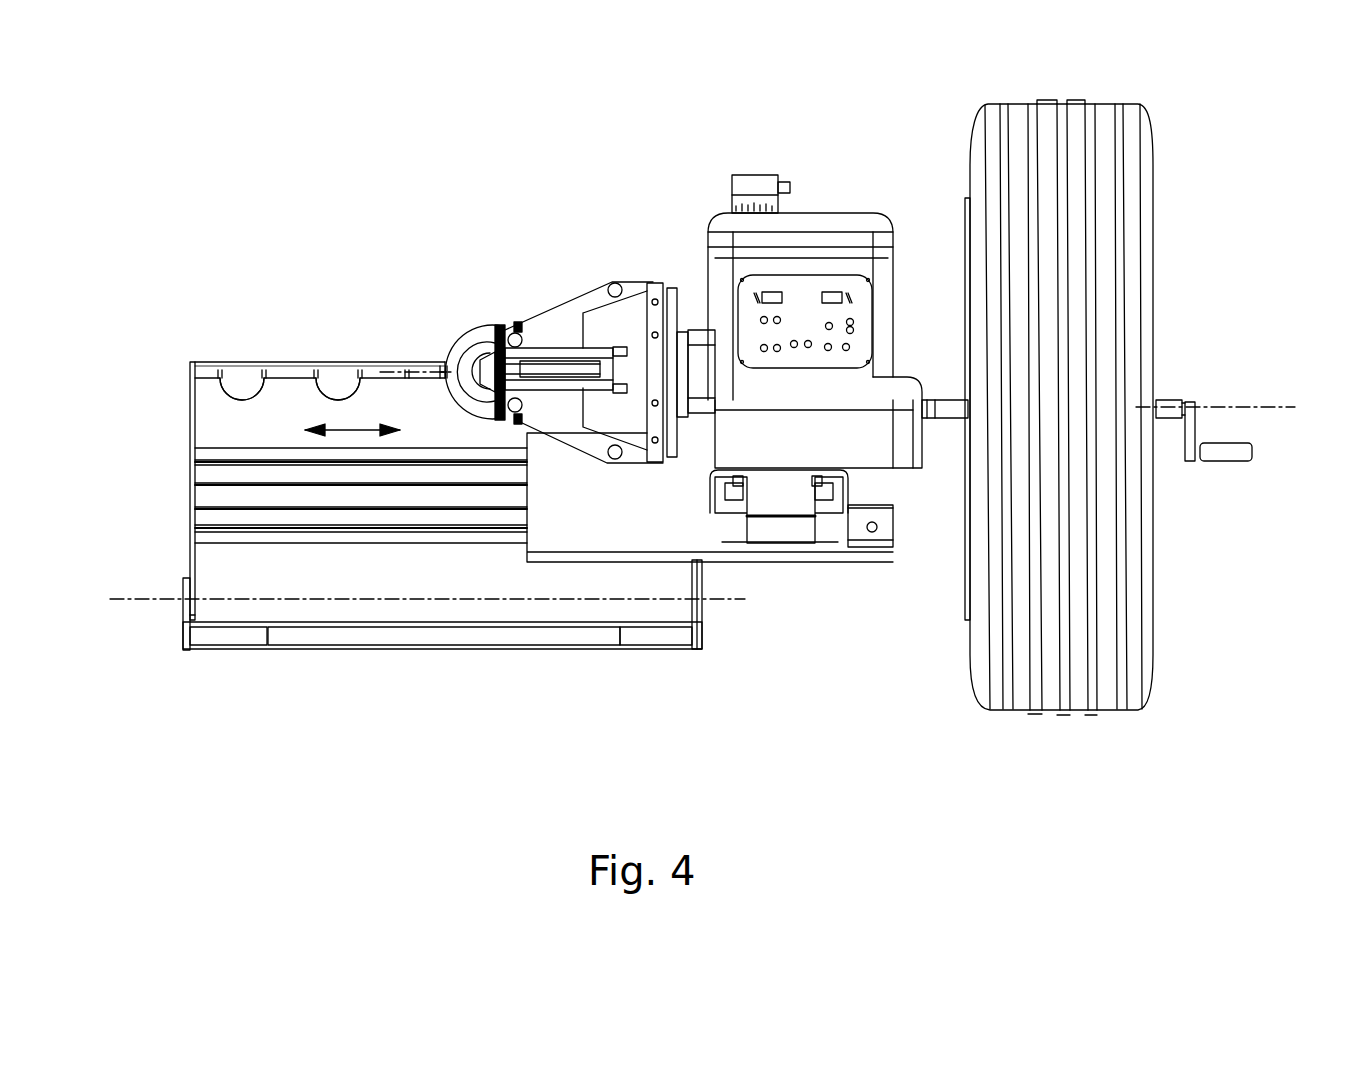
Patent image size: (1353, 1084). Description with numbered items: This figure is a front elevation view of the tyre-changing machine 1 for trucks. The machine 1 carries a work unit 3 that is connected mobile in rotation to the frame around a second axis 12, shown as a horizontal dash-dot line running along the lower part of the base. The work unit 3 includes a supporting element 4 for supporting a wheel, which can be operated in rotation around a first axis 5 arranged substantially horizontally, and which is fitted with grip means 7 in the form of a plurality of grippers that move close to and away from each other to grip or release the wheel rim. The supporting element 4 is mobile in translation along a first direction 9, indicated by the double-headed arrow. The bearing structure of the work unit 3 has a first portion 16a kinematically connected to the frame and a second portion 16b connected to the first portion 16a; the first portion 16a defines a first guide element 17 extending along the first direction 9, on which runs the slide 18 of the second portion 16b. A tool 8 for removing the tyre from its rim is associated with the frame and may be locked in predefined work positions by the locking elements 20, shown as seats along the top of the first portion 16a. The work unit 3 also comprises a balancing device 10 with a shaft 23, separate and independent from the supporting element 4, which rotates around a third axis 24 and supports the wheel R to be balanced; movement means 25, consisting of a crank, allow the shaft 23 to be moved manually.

The tyre-changing machine 1 is at (158, 160).
The work unit 3 is at (685, 482).
The supporting element 4 is at (588, 290).
The first axis 5 is at (388, 355).
The grip means 7 is at (548, 333).
The tool 8 is at (460, 350).
The first direction 9 is at (350, 432).
The balancing device 10 is at (838, 210).
The second axis 12 is at (118, 598).
The first portion 16a is at (215, 433).
The second portion 16b is at (848, 512).
The first guide element 17 is at (225, 473).
The slide 18 is at (575, 517).
The locking elements 20 is at (327, 365).
The shaft 23 is at (945, 400).
The third axis 24 is at (1245, 405).
The movement means 25 is at (1218, 470).
The wheel R is at (1160, 664).